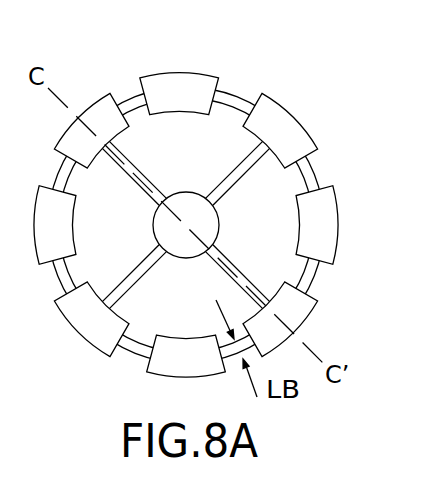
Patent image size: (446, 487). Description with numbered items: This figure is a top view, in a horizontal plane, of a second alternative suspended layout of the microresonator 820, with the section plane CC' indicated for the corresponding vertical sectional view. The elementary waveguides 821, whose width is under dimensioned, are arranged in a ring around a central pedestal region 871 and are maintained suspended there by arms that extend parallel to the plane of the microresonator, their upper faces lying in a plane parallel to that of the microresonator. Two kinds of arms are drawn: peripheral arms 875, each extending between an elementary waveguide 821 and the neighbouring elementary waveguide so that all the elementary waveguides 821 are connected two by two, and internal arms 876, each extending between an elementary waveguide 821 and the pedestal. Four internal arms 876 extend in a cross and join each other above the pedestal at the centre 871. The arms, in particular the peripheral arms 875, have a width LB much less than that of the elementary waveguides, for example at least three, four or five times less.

The lens barrel / aperture unit 820 is at (338, 118).
The elementary waveguide 821 is at (273, 106).
The central hub 871 is at (183, 203).
The peripheral arm 875 is at (310, 169).
The internal arm 876 is at (135, 278).